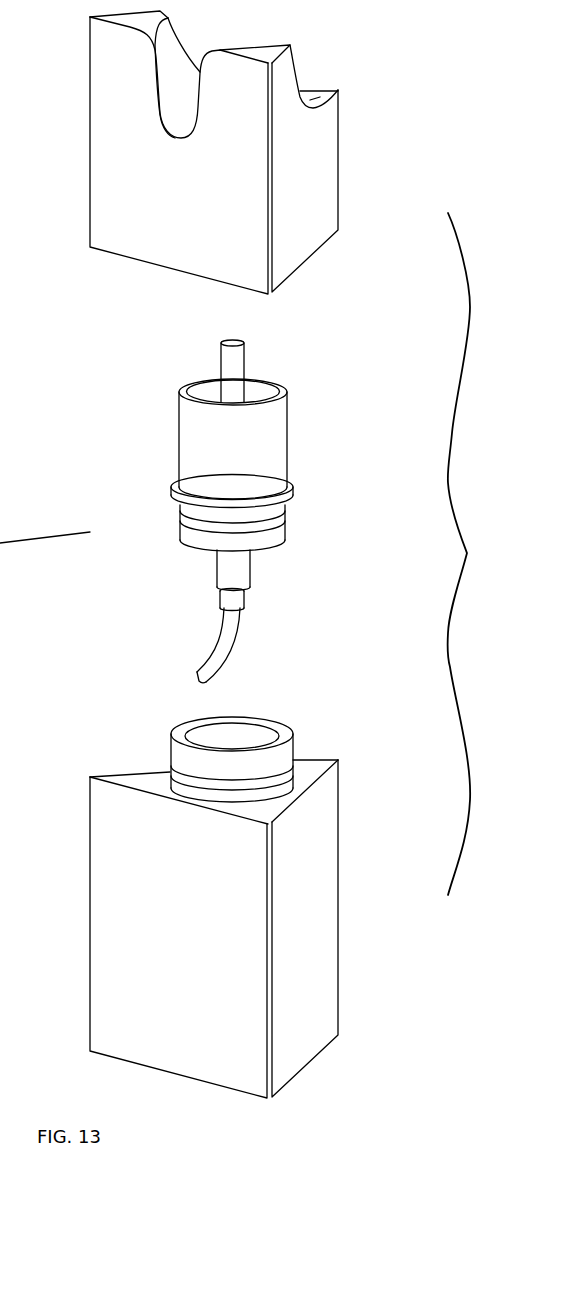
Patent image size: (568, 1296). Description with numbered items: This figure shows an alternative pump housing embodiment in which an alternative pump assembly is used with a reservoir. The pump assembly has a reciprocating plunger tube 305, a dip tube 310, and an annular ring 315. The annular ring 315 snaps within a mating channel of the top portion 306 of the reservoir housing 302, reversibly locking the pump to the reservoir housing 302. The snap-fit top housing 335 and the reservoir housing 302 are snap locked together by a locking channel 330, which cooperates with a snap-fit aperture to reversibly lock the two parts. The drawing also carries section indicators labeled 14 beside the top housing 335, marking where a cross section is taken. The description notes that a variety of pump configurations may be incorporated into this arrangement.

The section line 14- 14 is at (89, 241).
The reservoir housing 302 is at (338, 965).
The reciprocating plunger tube 305 is at (232, 367).
The top portion 306 is at (171, 748).
The dip tube 310 is at (228, 643).
The annular ring 315 is at (277, 525).
The locking channel 330 is at (285, 777).
The snap-fit top housing 335 is at (307, 182).